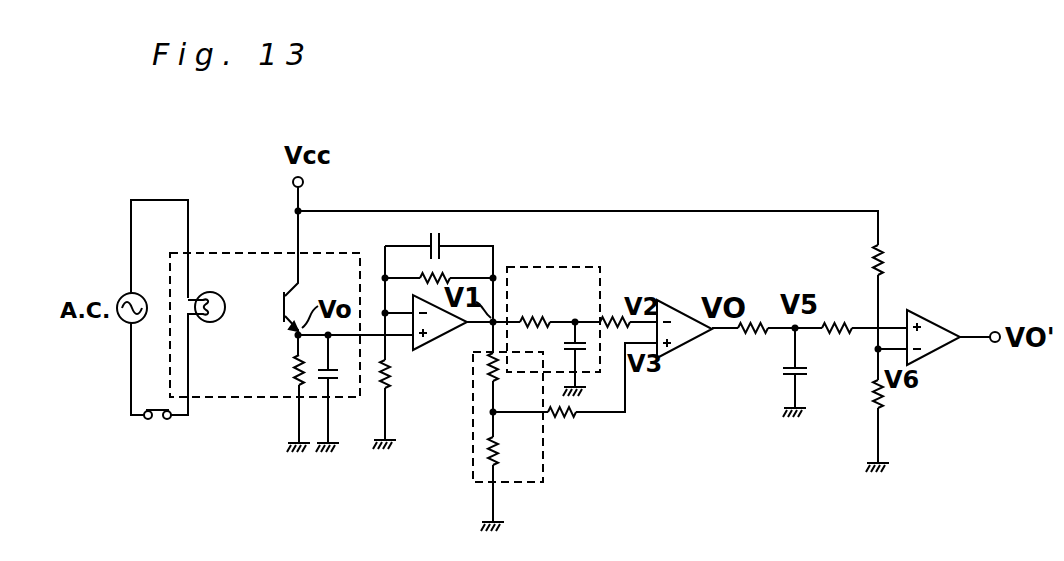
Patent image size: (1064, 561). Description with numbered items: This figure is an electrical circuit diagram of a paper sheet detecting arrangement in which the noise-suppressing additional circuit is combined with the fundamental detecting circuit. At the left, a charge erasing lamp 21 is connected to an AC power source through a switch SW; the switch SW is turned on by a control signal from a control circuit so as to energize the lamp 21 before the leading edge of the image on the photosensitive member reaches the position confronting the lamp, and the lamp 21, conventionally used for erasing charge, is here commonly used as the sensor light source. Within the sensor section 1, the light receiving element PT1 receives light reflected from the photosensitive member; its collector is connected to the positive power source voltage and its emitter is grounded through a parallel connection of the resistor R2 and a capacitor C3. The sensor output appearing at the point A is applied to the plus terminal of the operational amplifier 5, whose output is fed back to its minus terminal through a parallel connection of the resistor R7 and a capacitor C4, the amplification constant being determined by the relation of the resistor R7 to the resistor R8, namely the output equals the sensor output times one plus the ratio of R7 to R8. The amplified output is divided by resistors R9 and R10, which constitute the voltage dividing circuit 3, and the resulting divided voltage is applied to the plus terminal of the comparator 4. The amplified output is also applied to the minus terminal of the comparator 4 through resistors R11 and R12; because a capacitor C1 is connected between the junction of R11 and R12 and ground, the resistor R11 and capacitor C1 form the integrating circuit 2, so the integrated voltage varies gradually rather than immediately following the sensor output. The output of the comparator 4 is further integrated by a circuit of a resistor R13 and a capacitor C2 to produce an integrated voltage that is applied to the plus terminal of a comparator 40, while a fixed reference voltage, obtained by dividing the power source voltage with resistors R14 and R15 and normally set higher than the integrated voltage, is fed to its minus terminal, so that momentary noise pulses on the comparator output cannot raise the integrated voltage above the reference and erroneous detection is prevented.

The light detecting section 1 is at (232, 253).
The integrating circuit 2 is at (540, 267).
The voltage dividing circuit 3 is at (472, 470).
The comparator 4 is at (690, 347).
The operational amplifier 5 is at (434, 342).
The charge erasing lamp 21 is at (214, 322).
The comparator 40 is at (940, 350).
The switch SW is at (166, 420).
The light receiving element PT1 is at (300, 302).
The point A is at (296, 336).
The resistor R2 is at (297, 377).
The capacitor C3 is at (337, 383).
The resistor R7 is at (431, 273).
The resistor R8 is at (390, 366).
The capacitor C4 is at (438, 236).
The resistor R9 is at (498, 362).
The resistor R10 is at (500, 452).
The resistor R11 is at (526, 318).
The resistor R12 is at (612, 318).
The capacitor C1 is at (586, 348).
The resistor R13 is at (752, 322).
The capacitor C2 is at (783, 372).
The resistor R14 is at (886, 257).
The resistor R15 is at (876, 395).